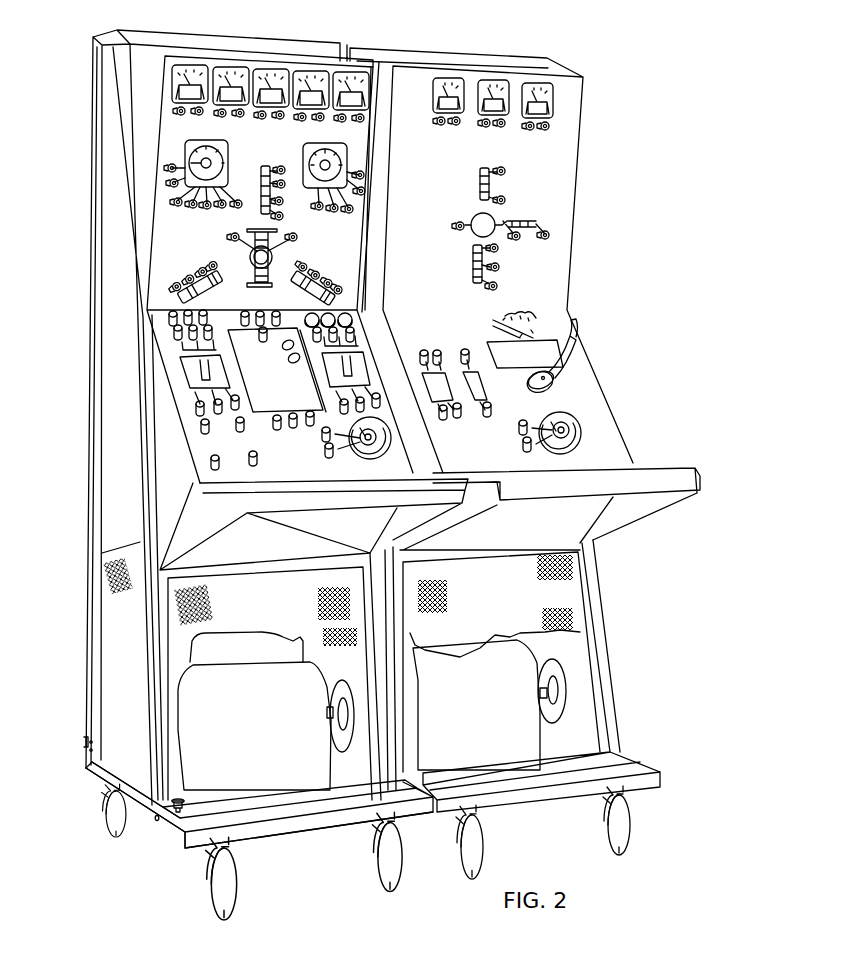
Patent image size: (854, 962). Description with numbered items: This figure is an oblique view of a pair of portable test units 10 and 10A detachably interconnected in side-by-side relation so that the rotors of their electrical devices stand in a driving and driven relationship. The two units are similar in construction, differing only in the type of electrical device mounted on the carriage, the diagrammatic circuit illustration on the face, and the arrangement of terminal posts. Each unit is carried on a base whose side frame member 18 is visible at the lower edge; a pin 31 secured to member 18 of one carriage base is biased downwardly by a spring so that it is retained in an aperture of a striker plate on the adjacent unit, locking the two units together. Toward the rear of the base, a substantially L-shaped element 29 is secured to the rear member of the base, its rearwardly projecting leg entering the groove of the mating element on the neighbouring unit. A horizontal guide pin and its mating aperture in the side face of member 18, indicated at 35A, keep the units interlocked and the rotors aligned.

The portable test unit 10 is at (233, 31).
The portable test unit 10A is at (458, 41).
The element 29 is at (80, 745).
The pin 31 is at (180, 803).
The base frame member 18 is at (140, 812).
The locating hole 35A is at (157, 822).